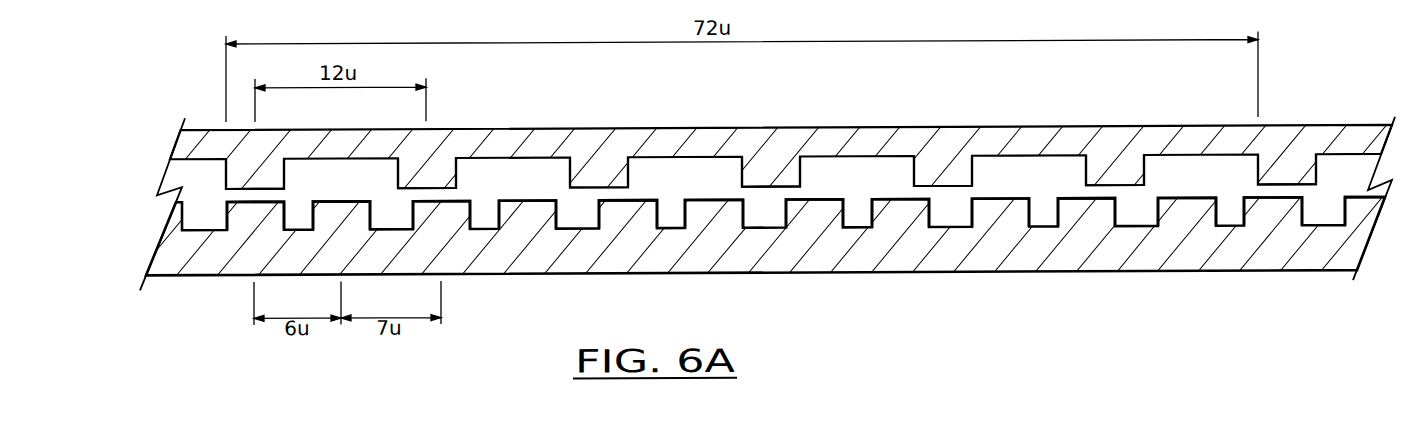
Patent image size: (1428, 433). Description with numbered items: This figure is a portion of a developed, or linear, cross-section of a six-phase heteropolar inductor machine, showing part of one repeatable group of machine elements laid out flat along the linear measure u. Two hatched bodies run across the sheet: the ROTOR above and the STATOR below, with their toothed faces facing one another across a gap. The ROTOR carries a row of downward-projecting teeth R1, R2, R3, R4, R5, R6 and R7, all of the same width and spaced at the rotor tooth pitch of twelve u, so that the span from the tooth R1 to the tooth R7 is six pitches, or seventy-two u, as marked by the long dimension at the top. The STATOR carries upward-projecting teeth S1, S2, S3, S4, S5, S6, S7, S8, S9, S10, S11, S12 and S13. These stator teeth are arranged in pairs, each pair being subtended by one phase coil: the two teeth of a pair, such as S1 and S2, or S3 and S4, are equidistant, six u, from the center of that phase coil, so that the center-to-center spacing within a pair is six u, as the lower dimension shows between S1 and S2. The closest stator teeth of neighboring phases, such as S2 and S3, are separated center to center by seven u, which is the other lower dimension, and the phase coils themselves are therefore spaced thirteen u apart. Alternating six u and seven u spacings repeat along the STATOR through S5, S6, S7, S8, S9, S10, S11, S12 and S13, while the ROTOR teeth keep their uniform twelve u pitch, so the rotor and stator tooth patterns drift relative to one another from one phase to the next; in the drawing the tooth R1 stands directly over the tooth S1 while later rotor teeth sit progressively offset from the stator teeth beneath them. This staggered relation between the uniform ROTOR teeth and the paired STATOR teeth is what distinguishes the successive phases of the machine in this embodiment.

The rotor ROTOR is at (920, 132).
The stator STATOR is at (843, 252).
The rotor tooth R1 is at (285, 172).
The rotor tooth R2 is at (457, 172).
The rotor tooth R3 is at (629, 172).
The rotor tooth R4 is at (801, 172).
The rotor tooth R5 is at (973, 172).
The rotor tooth R6 is at (1145, 172).
The rotor tooth R7 is at (1317, 172).
The stator tooth S1 is at (252, 208).
The stator tooth S2 is at (338, 208).
The stator tooth S3 is at (439, 208).
The stator tooth S4 is at (525, 208).
The stator tooth S5 is at (625, 208).
The stator tooth S6 is at (711, 208).
The stator tooth S7 is at (811, 208).
The stator tooth S8 is at (897, 208).
The stator tooth S9 is at (998, 208).
The stator tooth S10 is at (1084, 208).
The stator tooth S11 is at (1184, 208).
The stator tooth S12 is at (1270, 208).
The stator tooth S13 is at (1357, 208).